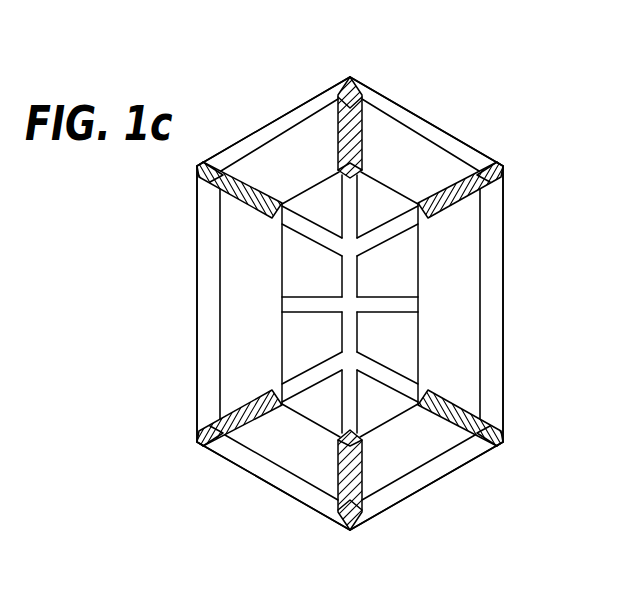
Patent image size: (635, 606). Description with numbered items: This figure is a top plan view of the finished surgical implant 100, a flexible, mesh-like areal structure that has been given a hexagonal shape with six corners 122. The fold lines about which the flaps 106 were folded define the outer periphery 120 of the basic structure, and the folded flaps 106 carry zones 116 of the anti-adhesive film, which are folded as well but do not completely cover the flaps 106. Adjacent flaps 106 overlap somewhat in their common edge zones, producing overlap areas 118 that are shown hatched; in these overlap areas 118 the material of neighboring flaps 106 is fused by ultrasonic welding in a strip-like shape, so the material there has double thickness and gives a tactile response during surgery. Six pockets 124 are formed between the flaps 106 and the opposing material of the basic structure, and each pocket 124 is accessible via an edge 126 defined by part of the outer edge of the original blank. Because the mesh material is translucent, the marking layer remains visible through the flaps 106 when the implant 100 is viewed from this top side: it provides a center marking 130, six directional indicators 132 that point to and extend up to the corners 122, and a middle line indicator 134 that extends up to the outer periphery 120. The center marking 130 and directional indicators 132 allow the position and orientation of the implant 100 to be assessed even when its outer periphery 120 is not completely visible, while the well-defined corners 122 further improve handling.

The implant 100 is at (177, 305).
The flaps 106 is at (228, 247).
The zones 116 is at (488, 300).
The overlap areas 118 is at (462, 205).
The outer periphery 120 is at (435, 127).
The corners 122 is at (501, 446).
The pockets 124 is at (287, 447).
The edges 126 is at (418, 278).
The center marking 130 is at (355, 309).
The directional indicators 132 is at (300, 383).
The middle line indicator 134 is at (303, 300).